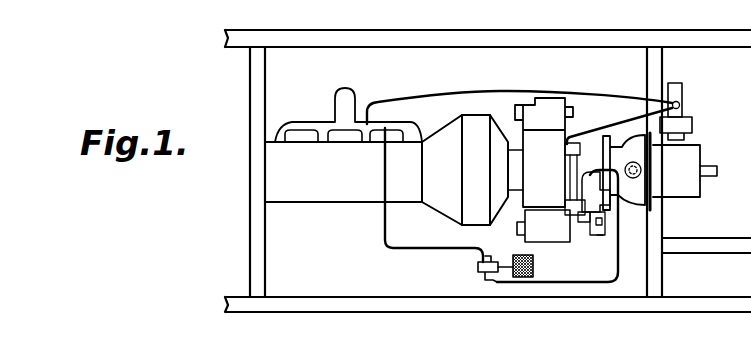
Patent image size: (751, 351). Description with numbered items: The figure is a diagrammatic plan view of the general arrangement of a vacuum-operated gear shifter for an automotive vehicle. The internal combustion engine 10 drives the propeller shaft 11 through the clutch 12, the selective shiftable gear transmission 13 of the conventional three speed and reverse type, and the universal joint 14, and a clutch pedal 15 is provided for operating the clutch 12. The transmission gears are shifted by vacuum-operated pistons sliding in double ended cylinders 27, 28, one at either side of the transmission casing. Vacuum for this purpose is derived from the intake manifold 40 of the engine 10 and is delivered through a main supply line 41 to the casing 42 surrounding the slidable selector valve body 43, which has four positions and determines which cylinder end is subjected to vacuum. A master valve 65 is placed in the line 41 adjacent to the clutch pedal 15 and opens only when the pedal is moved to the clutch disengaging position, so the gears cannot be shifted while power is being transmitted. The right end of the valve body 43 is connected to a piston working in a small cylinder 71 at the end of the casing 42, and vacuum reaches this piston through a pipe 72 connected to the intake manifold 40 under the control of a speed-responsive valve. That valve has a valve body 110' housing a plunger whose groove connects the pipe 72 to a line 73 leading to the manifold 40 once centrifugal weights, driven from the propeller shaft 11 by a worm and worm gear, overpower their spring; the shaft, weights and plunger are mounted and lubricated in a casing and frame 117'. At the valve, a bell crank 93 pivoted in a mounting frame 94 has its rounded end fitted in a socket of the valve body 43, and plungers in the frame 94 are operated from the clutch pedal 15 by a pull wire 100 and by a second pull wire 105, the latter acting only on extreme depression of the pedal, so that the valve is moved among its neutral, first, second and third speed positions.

The internal combustion engine 10 is at (278, 179).
The propeller shaft 11 is at (710, 163).
The clutch 12 is at (468, 195).
The selective shiftable gear transmission 13 is at (532, 168).
The universal joint 14 is at (683, 187).
The clutch pedal 15 is at (535, 267).
The double ended cylinder 27 is at (547, 107).
The double ended cylinder 28 is at (522, 230).
The intake manifold 40 is at (297, 128).
The main supply line 41 is at (382, 228).
The valve casing 42 is at (568, 184).
The selector valve body 43 is at (572, 205).
The master valve 65 is at (483, 275).
The small cylinder 71 is at (565, 149).
The pipe 72 is at (622, 122).
The line 73 is at (472, 92).
The bell crank 93 is at (585, 215).
The mounting frame 94 is at (595, 210).
The pull wire 100 is at (595, 225).
The pull wire 105 is at (605, 231).
The valve body 110' is at (700, 100).
The casing and frame 117' is at (700, 123).